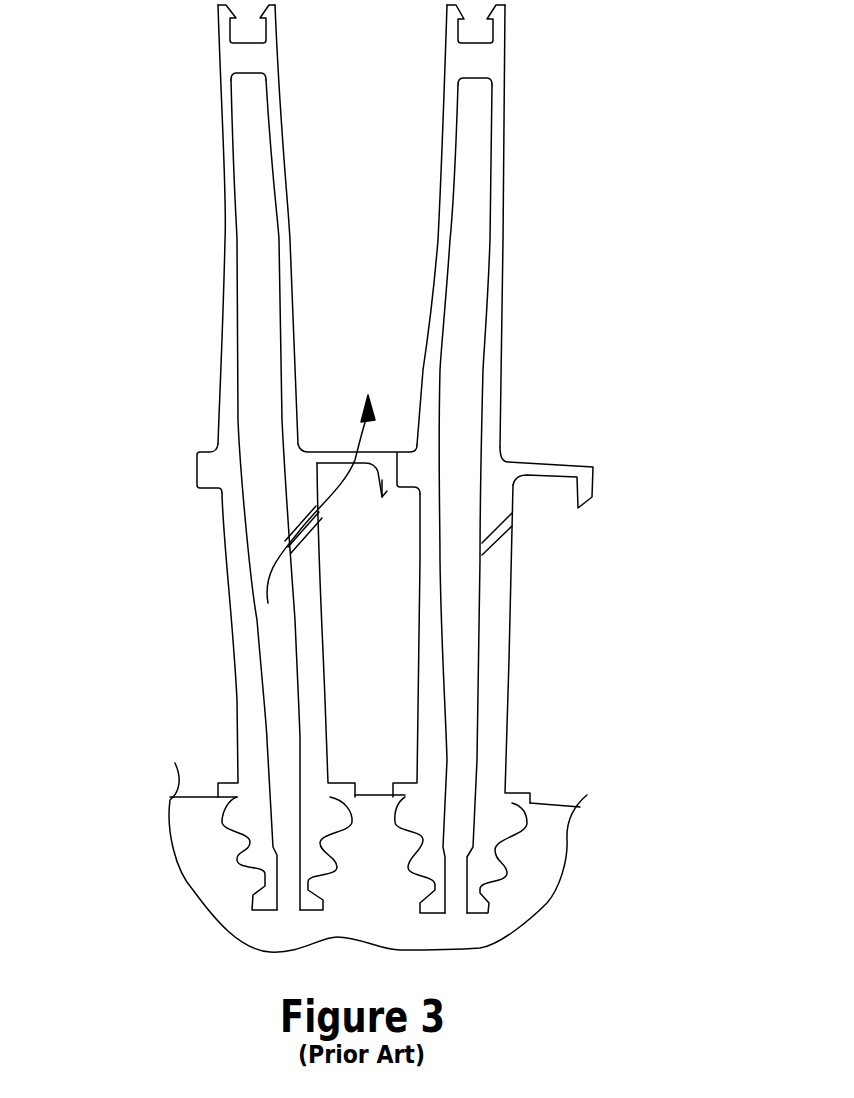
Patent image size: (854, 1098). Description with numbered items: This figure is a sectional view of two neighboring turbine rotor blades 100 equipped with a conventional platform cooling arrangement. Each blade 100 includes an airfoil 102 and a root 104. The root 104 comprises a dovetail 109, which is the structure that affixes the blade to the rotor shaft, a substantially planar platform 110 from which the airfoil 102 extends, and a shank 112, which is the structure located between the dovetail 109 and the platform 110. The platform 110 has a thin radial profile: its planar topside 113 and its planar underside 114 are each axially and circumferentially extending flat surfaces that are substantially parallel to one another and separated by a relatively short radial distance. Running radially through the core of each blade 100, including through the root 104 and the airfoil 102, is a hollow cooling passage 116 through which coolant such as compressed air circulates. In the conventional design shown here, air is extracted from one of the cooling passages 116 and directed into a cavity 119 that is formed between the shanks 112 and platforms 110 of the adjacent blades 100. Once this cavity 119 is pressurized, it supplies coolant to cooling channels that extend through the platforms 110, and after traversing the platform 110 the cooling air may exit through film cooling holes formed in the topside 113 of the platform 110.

The turbine rotor blade 100 is at (308, 220).
The airfoil 102 is at (222, 285).
The root 104 is at (596, 716).
The dovetail 109 is at (495, 868).
The platform 110 is at (347, 452).
The shank 112 is at (197, 667).
The topside 113 is at (375, 452).
The underside 114 is at (362, 464).
The cooling passage 116 is at (460, 410).
The cavity 119 is at (393, 626).